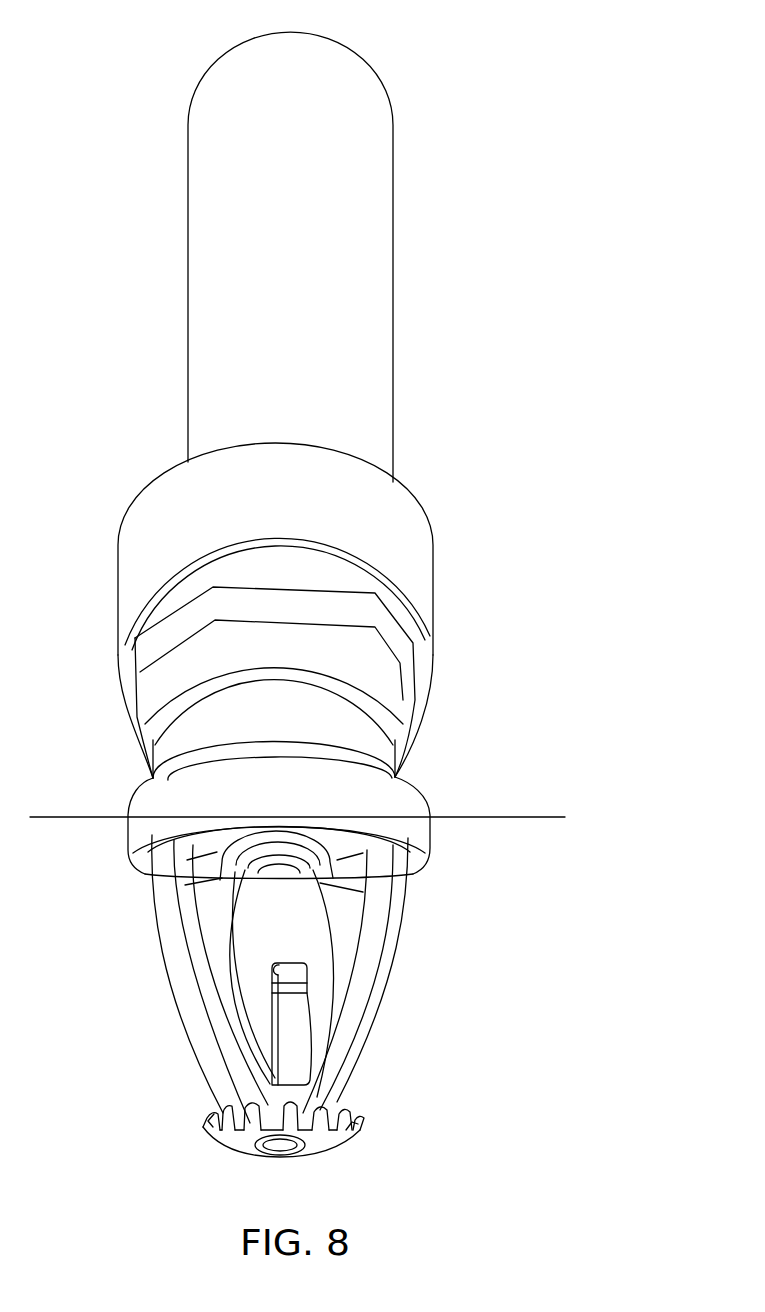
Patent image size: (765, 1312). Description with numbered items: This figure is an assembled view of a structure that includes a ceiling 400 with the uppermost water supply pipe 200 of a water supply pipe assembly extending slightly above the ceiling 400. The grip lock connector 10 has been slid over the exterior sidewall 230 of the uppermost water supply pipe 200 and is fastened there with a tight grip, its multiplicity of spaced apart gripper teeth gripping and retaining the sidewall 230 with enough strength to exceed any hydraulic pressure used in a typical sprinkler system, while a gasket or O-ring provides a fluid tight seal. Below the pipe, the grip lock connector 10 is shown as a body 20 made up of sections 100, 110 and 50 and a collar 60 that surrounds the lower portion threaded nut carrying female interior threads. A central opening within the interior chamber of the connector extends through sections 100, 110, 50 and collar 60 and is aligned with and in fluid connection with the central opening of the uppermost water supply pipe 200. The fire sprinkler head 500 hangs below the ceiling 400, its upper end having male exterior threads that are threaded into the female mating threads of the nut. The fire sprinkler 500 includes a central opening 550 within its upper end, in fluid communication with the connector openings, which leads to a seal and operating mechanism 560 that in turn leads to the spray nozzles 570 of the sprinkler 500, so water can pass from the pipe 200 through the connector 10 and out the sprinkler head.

The grip lock connector 10 is at (295, 661).
The sprinkler body 20 is at (383, 507).
The section 50 is at (165, 752).
The collar 60 is at (357, 764).
The section 100 is at (148, 650).
The section 110 is at (148, 698).
The uppermost water supply pipe 200 is at (448, 273).
The exterior sidewall 230 is at (328, 326).
The ceiling 400 is at (529, 818).
The fire sprinkler head 500 is at (317, 960).
The central opening 550 is at (277, 862).
The seal and operating mechanism 560 is at (290, 943).
The spray nozzles 570 is at (203, 1132).